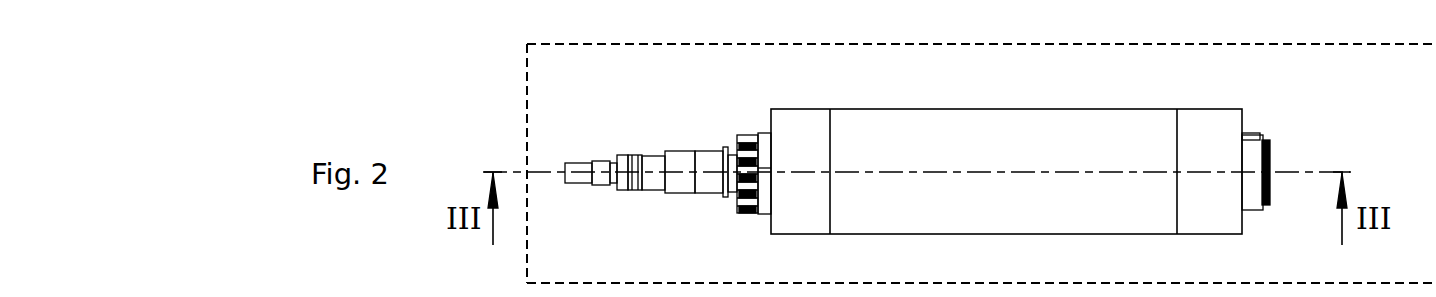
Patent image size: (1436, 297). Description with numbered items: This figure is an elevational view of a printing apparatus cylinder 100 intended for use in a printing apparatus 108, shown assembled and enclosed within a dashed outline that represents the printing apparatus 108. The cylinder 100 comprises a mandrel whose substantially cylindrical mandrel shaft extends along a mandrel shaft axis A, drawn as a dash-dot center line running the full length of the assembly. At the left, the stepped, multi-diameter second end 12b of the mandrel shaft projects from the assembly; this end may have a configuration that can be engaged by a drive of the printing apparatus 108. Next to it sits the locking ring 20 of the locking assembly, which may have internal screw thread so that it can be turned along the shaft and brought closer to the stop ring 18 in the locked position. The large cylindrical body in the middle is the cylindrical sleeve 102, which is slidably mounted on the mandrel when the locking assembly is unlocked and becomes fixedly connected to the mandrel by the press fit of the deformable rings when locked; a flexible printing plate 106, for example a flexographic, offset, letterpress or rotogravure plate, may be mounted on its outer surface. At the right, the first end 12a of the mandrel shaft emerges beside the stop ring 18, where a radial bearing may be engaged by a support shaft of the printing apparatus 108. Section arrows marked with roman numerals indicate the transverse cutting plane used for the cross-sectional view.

The printing apparatus 108 is at (1048, 44).
The mandrel shaft axis A is at (1009, 170).
The second end of the mandrel shaft 12b is at (607, 139).
The locking ring 20 is at (747, 213).
The printing apparatus cylinder 100 is at (1032, 145).
The cylindrical sleeve 102 is at (811, 117).
The printing plate 106 is at (1108, 155).
The first end of the mandrel shaft 12a is at (1286, 121).
The stop ring 18 is at (1271, 149).